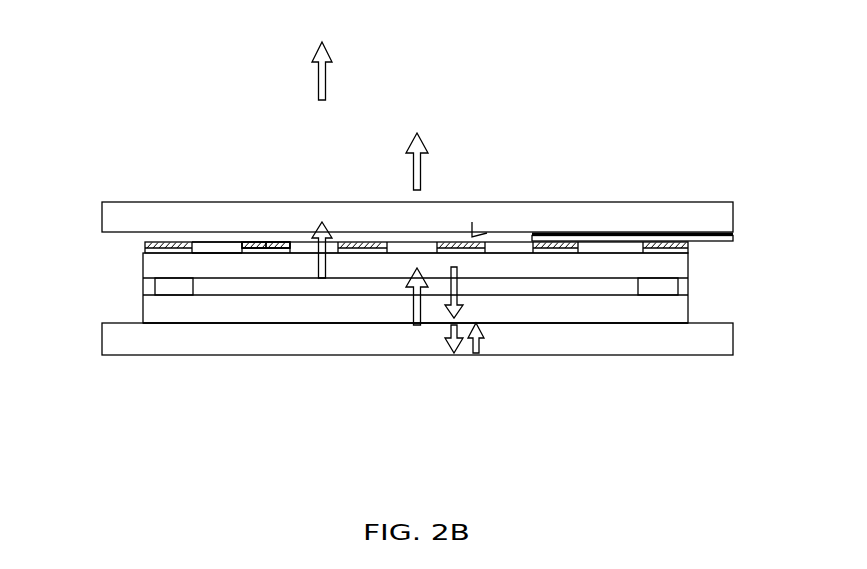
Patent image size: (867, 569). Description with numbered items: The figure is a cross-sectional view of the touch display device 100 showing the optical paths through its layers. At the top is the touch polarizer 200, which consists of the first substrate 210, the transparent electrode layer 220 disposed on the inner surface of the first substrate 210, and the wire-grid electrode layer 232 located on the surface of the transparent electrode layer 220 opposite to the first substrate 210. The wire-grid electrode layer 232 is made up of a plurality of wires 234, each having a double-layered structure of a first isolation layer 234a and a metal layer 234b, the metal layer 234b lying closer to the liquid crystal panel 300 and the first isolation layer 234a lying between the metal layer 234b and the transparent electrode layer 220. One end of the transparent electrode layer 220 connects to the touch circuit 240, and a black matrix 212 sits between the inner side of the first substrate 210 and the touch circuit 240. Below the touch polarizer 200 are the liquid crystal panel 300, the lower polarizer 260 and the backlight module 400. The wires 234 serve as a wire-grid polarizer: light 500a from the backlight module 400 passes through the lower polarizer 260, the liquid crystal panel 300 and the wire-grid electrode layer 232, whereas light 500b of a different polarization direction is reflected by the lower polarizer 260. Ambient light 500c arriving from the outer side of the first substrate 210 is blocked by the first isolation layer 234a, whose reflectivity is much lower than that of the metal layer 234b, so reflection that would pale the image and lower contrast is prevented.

The touch display device 100 is at (145, 71).
The touch polarizer 200 is at (411, 177).
The first substrate 210 is at (105, 217).
The black matrix 212 is at (697, 232).
The transparent electrode layer 220 is at (207, 238).
The wire-grid electrode layer 232 is at (132, 252).
The wire 234 is at (327, 148).
The first isolation layer 234a is at (250, 245).
The metal layer 234b is at (275, 245).
The touch circuit 240 is at (617, 238).
The lower polarizer 260 is at (685, 323).
The liquid crystal panel 300 is at (140, 253).
The backlight module 400 is at (112, 338).
The light 500a is at (415, 312).
The light 500b is at (480, 355).
The ambient light 500c is at (472, 237).